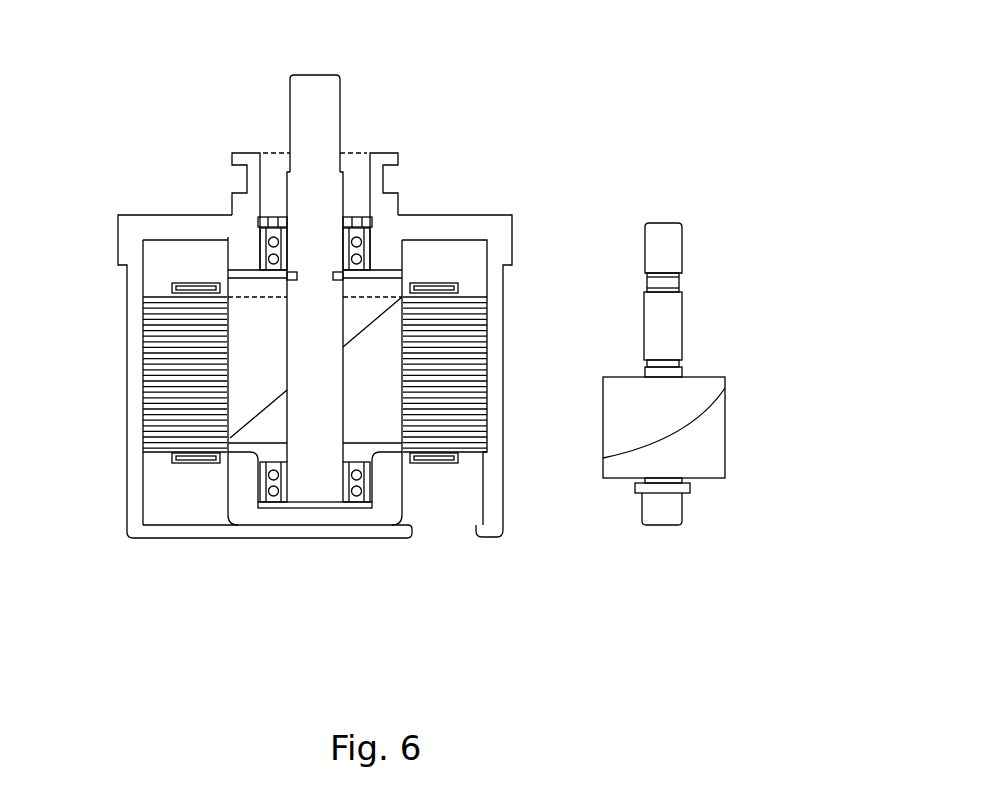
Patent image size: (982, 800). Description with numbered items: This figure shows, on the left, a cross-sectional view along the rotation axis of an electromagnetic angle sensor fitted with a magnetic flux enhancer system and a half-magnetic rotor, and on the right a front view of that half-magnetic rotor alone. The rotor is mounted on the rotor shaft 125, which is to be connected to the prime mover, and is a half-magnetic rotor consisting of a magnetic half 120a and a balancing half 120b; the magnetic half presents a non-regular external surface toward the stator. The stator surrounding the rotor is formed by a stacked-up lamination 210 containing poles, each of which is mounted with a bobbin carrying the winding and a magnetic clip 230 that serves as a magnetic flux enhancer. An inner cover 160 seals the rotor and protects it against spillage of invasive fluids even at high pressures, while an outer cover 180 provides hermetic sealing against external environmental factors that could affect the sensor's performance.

The rotor shaft 125 is at (342, 88).
The balancing half 120b is at (240, 306).
The magnetic half 120a is at (371, 428).
The magnetic clip 230 is at (414, 272).
The stacked-up lamination 210 is at (142, 308).
The outer cover 180 is at (127, 522).
The inner cover 160 is at (405, 493).